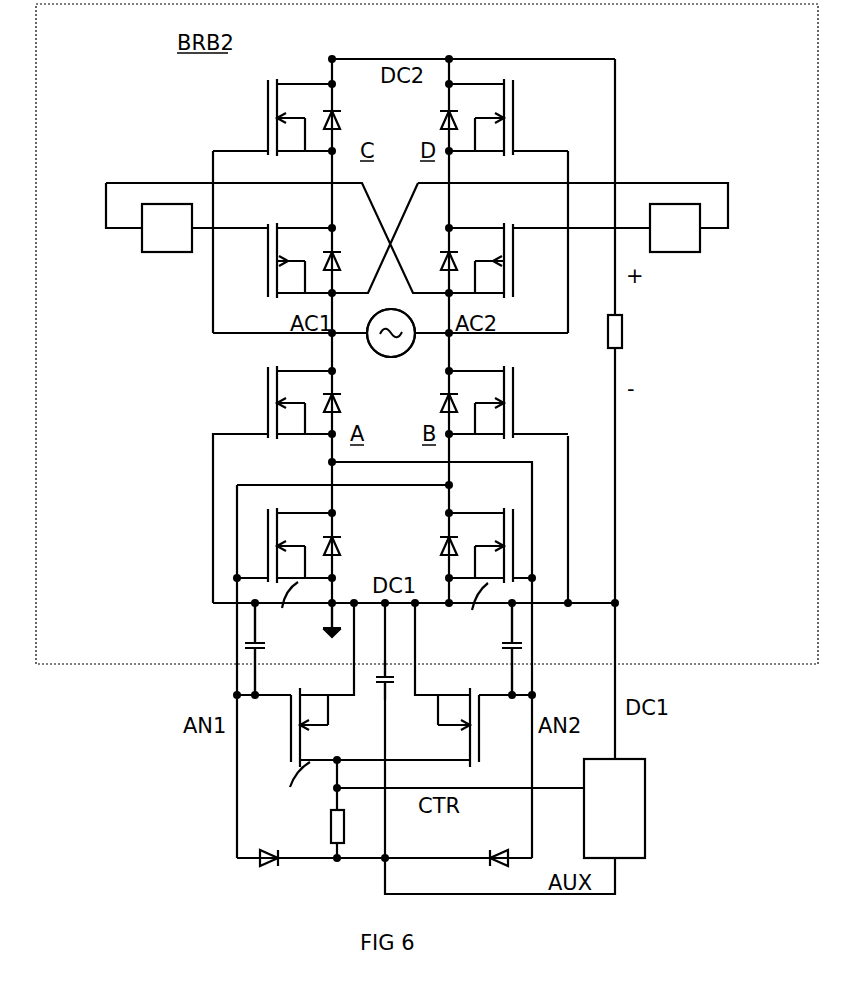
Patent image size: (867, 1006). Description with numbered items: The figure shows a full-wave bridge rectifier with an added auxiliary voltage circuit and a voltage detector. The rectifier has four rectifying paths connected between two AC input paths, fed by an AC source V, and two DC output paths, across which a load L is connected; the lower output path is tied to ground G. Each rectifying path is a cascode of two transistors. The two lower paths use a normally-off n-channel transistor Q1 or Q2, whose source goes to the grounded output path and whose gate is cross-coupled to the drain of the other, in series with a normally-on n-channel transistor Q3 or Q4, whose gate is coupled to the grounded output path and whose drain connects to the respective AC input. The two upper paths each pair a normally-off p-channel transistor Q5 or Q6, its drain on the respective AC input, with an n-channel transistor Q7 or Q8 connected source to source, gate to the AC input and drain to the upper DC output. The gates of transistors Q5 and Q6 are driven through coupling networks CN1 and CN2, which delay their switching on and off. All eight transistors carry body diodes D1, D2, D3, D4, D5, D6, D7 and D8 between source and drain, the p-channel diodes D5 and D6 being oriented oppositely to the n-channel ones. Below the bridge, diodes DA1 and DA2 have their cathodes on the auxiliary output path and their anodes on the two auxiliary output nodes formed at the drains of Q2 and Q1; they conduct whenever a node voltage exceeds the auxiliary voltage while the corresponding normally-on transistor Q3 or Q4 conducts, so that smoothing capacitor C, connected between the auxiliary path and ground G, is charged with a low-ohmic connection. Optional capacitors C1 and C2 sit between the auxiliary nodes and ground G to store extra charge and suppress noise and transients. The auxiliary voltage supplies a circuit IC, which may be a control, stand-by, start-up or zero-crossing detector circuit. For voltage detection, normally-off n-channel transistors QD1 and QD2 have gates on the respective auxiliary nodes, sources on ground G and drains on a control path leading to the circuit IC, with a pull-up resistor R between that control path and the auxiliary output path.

The normally-off n-channel field-effect transistor Q1 is at (284, 574).
The normally-off n-channel field-effect transistor Q2 is at (490, 575).
The normally-on n-channel field-effect transistor Q3 is at (272, 391).
The normally-on n-channel field-effect transistor Q4 is at (508, 391).
The normally-off p-channel field-effect transistor Q5 is at (284, 260).
The normally-off p-channel field-effect transistor Q6 is at (481, 249).
The normally-off n-channel field-effect transistor Q7 is at (272, 117).
The normally-on n-channel field-effect transistor Q8 is at (508, 131).
The body diode D1 is at (347, 535).
The body diode D2 is at (435, 535).
The body diode D3 is at (347, 393).
The body diode D4 is at (435, 393).
The body diode D5 is at (347, 250).
The body diode D6 is at (435, 250).
The body diode D7 is at (347, 111).
The body diode D8 is at (435, 111).
The voltage detection transistor QD1 is at (300, 754).
The voltage detection transistor QD2 is at (511, 727).
The capacitor C1 is at (270, 649).
The capacitor C2 is at (497, 649).
The capacitor C is at (380, 688).
The pull-up resistor R is at (351, 826).
The load L is at (629, 331).
The diode DA1 is at (275, 847).
The diode DA2 is at (505, 847).
The coupling network CN1 is at (163, 246).
The coupling network CN2 is at (687, 246).
The circuit IC is at (645, 782).
The AC source V is at (391, 351).
The ground G is at (324, 629).